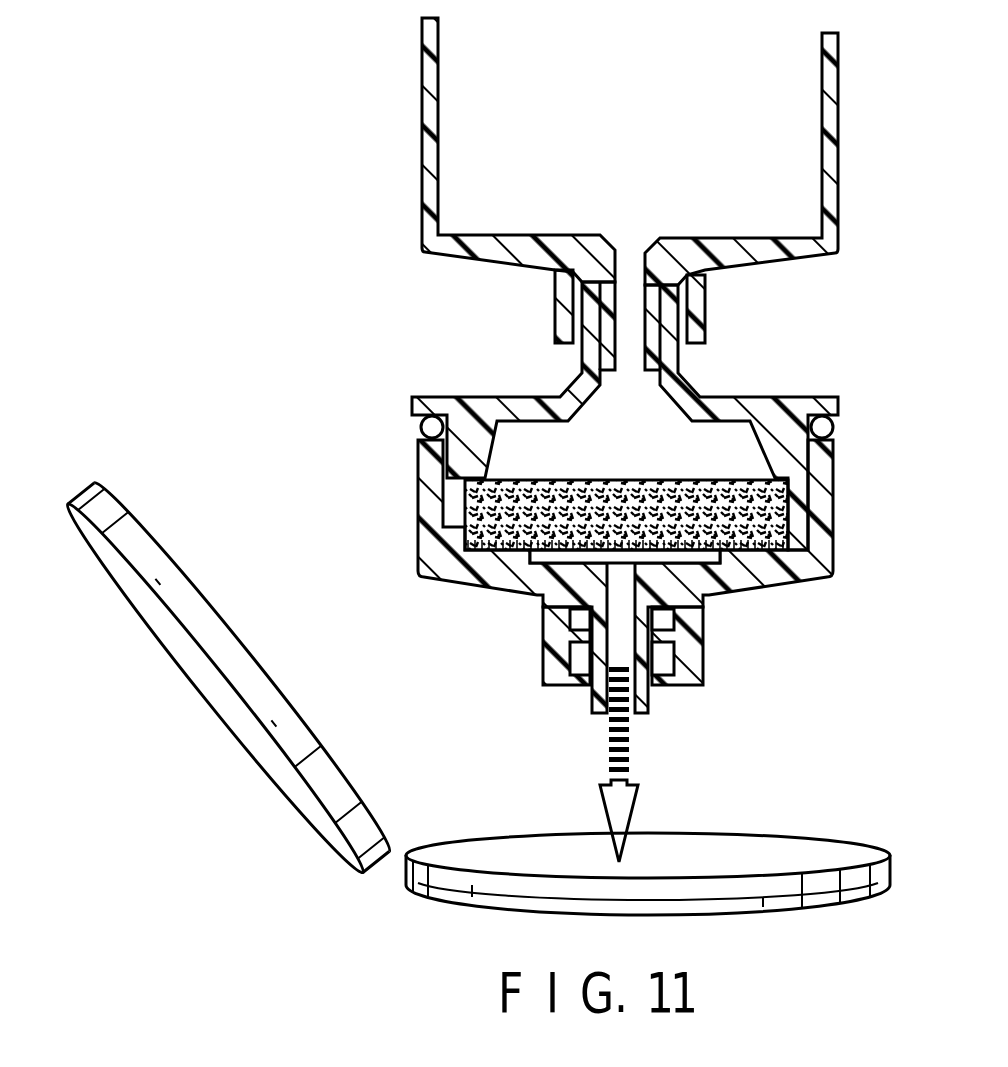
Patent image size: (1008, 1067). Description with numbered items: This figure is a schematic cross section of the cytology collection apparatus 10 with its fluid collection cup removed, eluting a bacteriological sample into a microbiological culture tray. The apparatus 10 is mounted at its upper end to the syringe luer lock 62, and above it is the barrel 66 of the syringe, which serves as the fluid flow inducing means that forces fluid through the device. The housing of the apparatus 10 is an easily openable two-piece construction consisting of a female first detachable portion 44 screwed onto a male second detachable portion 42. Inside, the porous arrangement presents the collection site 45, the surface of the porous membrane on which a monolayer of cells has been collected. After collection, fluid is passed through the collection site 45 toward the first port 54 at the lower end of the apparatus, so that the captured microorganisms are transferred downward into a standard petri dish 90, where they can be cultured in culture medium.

The cytology collection apparatus 10 is at (667, 440).
The second detachable portion 42 is at (838, 405).
The first detachable portion 44 is at (833, 568).
The surface of the porous membrane 45 is at (770, 556).
The first port 54 is at (540, 668).
The syringe luer lock 62 is at (705, 292).
The barrel 66 is at (838, 124).
The petri dish 90 is at (857, 845).